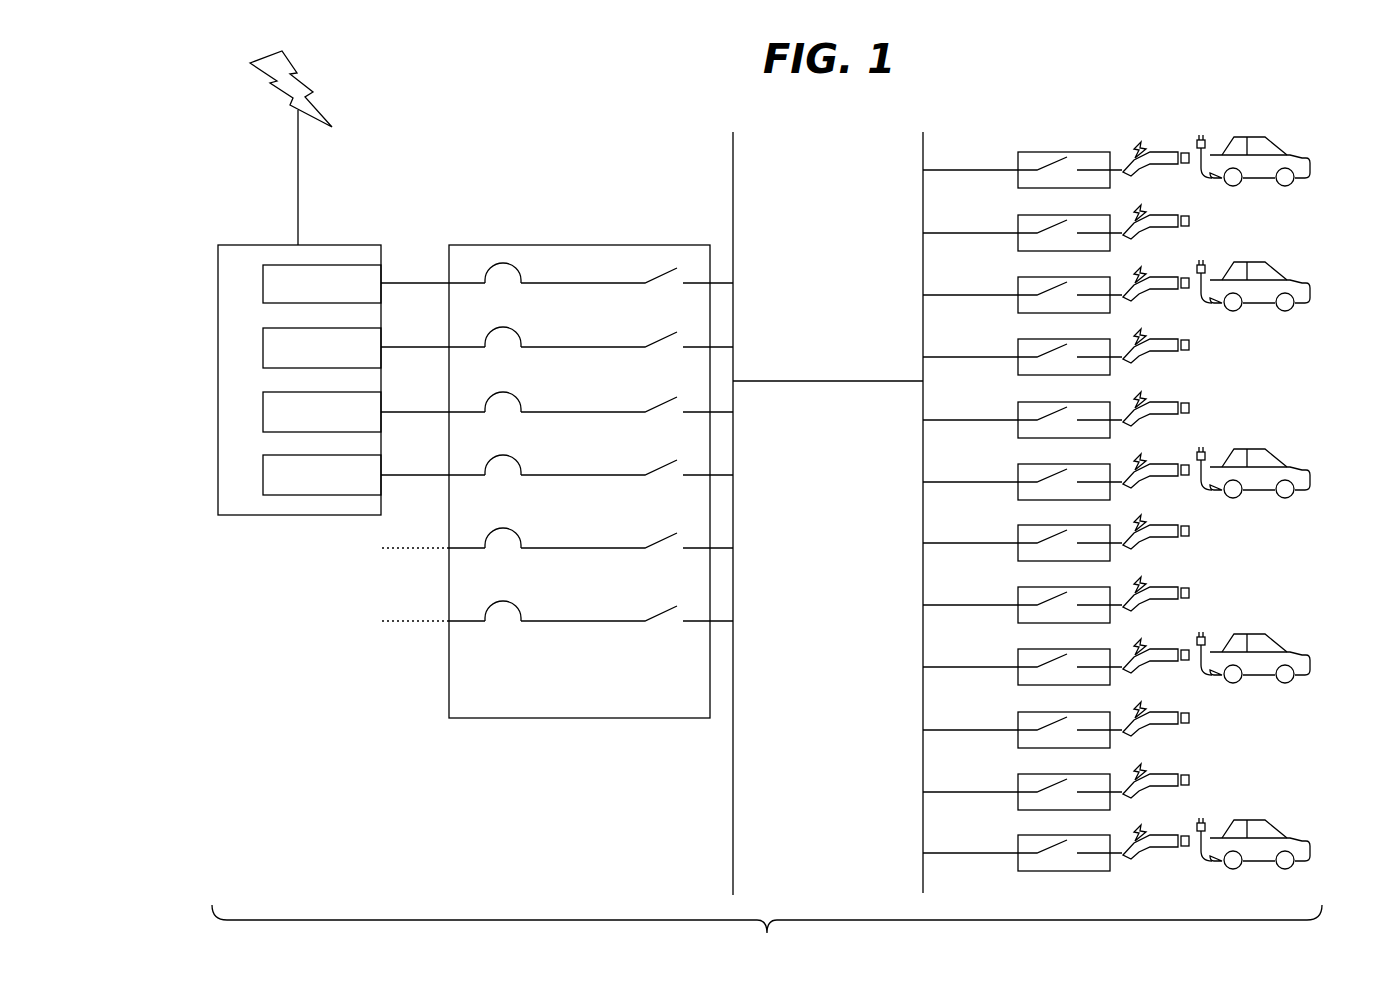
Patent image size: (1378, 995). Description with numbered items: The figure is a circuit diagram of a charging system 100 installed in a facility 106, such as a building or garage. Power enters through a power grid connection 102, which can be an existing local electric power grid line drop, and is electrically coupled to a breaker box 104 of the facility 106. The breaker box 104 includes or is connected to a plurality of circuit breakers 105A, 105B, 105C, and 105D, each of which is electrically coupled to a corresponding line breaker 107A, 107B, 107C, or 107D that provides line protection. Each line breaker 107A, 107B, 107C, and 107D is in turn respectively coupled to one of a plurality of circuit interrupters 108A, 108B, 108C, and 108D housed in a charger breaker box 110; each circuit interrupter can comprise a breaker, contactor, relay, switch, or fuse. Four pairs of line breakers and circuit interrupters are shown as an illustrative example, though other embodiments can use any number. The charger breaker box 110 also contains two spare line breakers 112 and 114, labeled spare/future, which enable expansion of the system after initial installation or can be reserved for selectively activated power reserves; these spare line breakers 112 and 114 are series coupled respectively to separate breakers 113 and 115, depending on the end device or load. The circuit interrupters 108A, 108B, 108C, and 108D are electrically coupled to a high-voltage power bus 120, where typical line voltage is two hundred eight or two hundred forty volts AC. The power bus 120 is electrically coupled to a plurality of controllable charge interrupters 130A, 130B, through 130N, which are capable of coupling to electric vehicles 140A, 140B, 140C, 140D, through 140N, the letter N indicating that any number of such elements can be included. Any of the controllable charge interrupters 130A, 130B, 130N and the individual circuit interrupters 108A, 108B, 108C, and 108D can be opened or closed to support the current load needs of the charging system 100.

The charging system 100 is at (572, 145).
The power grid connection 102 is at (296, 150).
The breaker box 104 is at (259, 245).
The circuit breaker 105A is at (278, 283).
The circuit breaker 105B is at (278, 347).
The circuit breaker 105C is at (278, 412).
The circuit breaker 105D is at (278, 475).
The facility 106 is at (767, 935).
The line breaker 107A is at (495, 266).
The line breaker 107B is at (495, 330).
The line breaker 107C is at (495, 395).
The line breaker 107D is at (495, 458).
The circuit interrupter 108A is at (645, 285).
The circuit interrupter 108B is at (645, 350).
The circuit interrupter 108C is at (645, 414).
The circuit interrupter 108D is at (645, 477).
The charger breaker box 110 is at (690, 705).
The spare line breaker 112 is at (630, 550).
The breaker 113 is at (500, 530).
The spare line breaker 114 is at (630, 623).
The breaker 115 is at (500, 603).
The high-voltage power bus 120 is at (921, 400).
The controllable charge interrupter 130A is at (1073, 158).
The controllable charge interrupter 130B is at (1018, 218).
The controllable charge interrupter 130N is at (1080, 862).
The electric vehicle 140A is at (1305, 152).
The electric vehicle 140B is at (1305, 280).
The electric vehicle 140C is at (1305, 467).
The electric vehicle 140D is at (1305, 652).
The electric vehicle 140N is at (1305, 838).